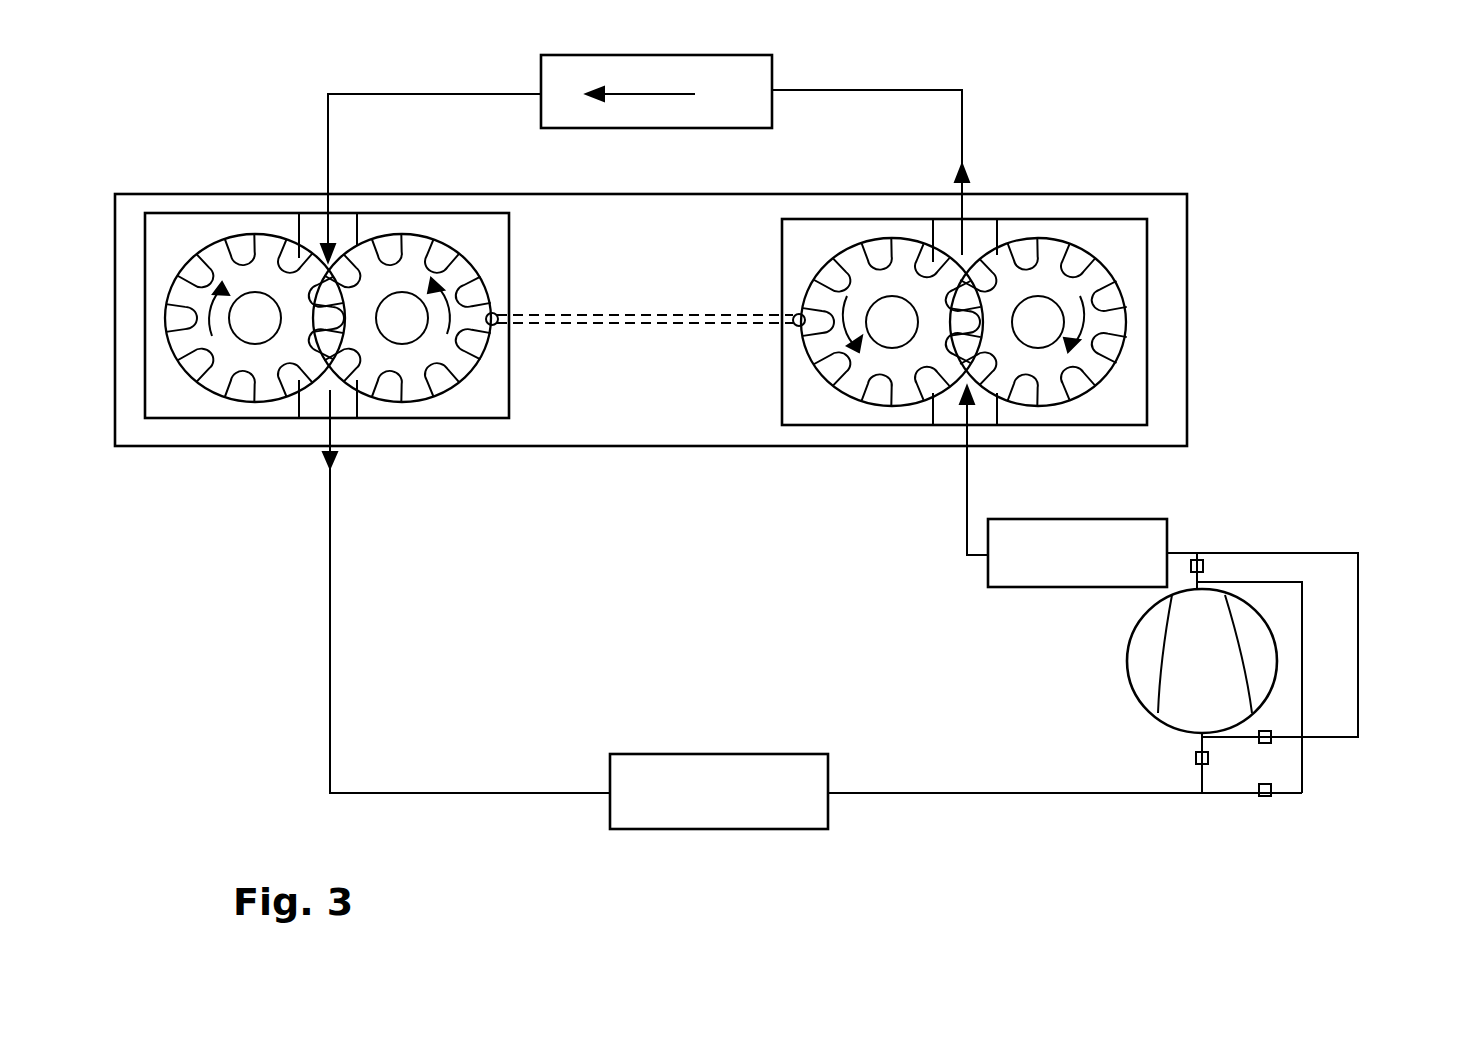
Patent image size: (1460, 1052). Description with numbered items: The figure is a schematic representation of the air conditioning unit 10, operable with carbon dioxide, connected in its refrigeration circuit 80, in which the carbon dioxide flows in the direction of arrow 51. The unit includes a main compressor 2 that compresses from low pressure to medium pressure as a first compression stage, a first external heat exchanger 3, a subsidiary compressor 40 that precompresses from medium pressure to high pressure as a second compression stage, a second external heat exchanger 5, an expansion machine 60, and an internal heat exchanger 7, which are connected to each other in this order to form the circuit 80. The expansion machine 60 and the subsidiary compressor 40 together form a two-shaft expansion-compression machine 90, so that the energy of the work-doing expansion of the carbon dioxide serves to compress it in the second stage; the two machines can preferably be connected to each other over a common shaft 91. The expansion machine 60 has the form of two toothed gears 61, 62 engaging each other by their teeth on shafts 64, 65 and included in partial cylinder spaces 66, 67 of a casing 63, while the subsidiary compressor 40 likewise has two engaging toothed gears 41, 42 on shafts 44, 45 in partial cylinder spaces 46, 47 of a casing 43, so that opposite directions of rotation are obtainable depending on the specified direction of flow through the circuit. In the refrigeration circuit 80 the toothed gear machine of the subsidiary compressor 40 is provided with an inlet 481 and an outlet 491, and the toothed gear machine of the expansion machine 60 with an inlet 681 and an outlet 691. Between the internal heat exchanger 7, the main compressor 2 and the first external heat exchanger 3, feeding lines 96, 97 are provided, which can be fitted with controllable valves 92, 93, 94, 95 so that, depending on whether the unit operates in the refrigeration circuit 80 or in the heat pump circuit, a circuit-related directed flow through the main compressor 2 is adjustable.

The air conditioning unit 10 is at (1192, 98).
The expansion-compression machine 90 is at (676, 448).
The common shaft 91 is at (637, 310).
The expansion machine 60 is at (178, 422).
The toothed gear 61 is at (270, 397).
The toothed gear 62 is at (480, 372).
The casing 63 is at (500, 250).
The shaft 64 is at (255, 313).
The shaft 65 is at (405, 308).
The partial cylinder space 66 is at (242, 247).
The partial cylinder space 67 is at (390, 245).
The inlet 681 is at (343, 198).
The outlet 691 is at (348, 407).
The subsidiary compressor 40 is at (1150, 382).
The toothed gear 41 is at (880, 398).
The toothed gear 42 is at (1085, 395).
The casing 43 is at (785, 251).
The shaft 44 is at (890, 315).
The shaft 45 is at (1040, 315).
The partial cylinder space 46 is at (903, 252).
The partial cylinder space 47 is at (1043, 252).
The inlet 481 is at (980, 416).
The outlet 491 is at (978, 232).
The refrigeration circuit 80 is at (931, 90).
The second external heat exchanger 5 is at (735, 55).
The arrow 51 is at (654, 94).
The internal heat exchanger 7 is at (735, 754).
The first external heat exchanger 3 is at (1150, 520).
The main compressor 2 is at (1126, 665).
The controllable valve 92 is at (1194, 759).
The controllable valve 93 is at (1260, 744).
The controllable valve 94 is at (1265, 797).
The controllable valve 95 is at (1205, 566).
The feeding line 96 is at (1305, 765).
The feeding line 97 is at (1360, 650).